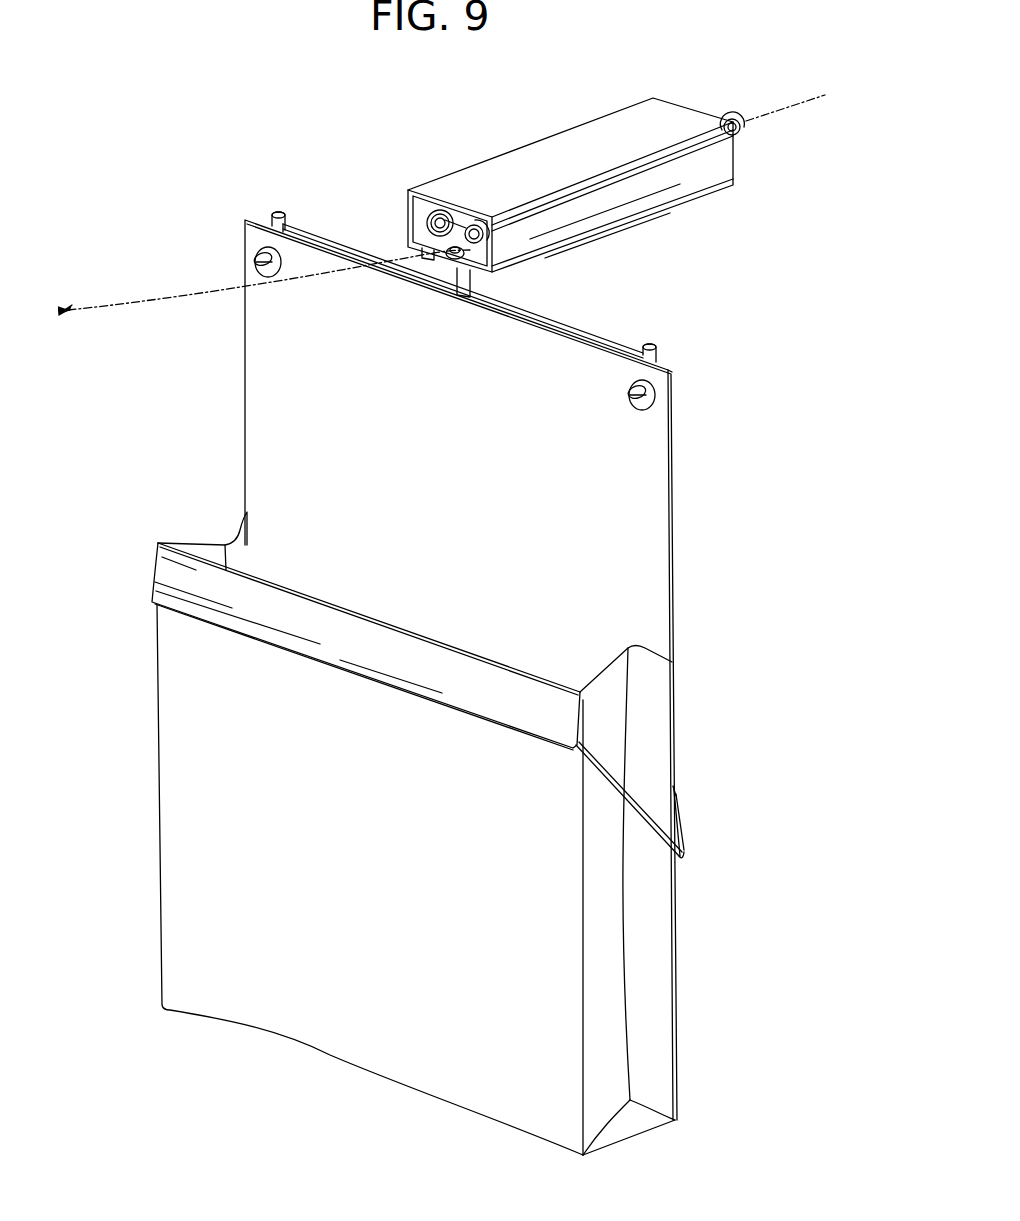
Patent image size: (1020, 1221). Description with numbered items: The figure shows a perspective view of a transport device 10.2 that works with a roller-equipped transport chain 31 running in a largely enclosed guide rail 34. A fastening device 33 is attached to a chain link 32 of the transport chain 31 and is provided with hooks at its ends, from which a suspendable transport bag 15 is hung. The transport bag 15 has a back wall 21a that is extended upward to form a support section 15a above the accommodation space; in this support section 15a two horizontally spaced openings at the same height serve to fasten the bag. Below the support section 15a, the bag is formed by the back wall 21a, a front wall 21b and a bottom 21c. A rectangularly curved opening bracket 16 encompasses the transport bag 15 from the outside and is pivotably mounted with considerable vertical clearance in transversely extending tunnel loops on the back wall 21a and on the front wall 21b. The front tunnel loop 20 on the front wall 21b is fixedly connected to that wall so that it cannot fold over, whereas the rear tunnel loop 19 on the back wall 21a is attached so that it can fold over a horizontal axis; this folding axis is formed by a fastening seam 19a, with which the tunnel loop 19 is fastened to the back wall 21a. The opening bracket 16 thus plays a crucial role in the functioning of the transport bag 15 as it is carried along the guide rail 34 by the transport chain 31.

The transport device 10.2 is at (228, 158).
The transport bag 15 is at (690, 691).
The support section 15a is at (636, 470).
The opening bracket 16 is at (652, 820).
The rear tunnel loop 19 is at (682, 841).
The fastening seam 19a is at (676, 788).
The front tunnel loop 20 is at (370, 655).
The back wall 21a is at (673, 938).
The front wall 21b is at (333, 982).
The bottom 21c is at (636, 1140).
The transport chain 31 is at (215, 297).
The chain link 32 is at (426, 273).
The fastening device 33 is at (590, 323).
The guide rail 34 is at (610, 208).